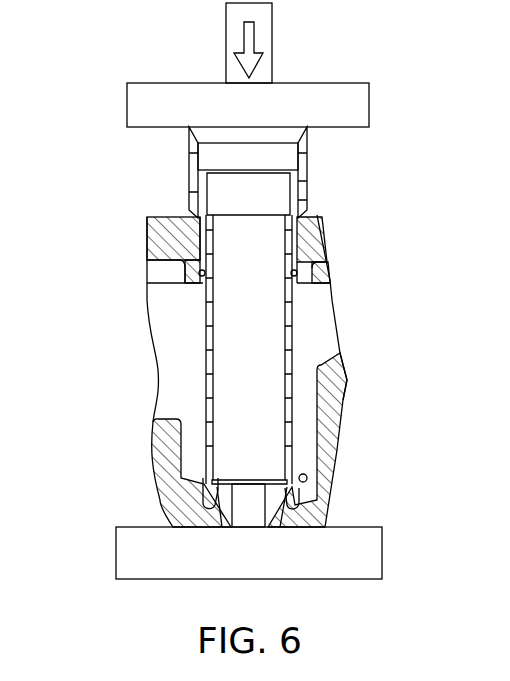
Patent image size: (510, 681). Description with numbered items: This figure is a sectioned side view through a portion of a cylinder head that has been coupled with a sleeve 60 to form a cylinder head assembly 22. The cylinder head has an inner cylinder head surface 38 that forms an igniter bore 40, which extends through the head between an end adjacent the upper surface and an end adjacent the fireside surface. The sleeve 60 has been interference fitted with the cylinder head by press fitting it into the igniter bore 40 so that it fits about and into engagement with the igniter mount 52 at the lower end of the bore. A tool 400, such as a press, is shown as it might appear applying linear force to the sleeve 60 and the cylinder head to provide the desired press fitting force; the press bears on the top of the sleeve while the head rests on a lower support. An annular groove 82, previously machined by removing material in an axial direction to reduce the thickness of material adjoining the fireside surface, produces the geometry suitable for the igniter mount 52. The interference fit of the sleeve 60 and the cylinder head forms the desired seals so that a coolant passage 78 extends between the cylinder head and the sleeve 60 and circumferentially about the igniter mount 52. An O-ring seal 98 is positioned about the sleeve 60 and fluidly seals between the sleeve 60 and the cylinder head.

The tool 400 is at (345, 71).
The cylinder head assembly 22 is at (79, 144).
The inner cylinder head surface 38 is at (310, 222).
The O-ring seal 98 is at (304, 268).
The sleeve 60 is at (308, 160).
The igniter bore 40 is at (311, 341).
The coolant passage 78 is at (200, 490).
The annular groove 82 is at (289, 496).
The igniter mount 52 is at (279, 519).